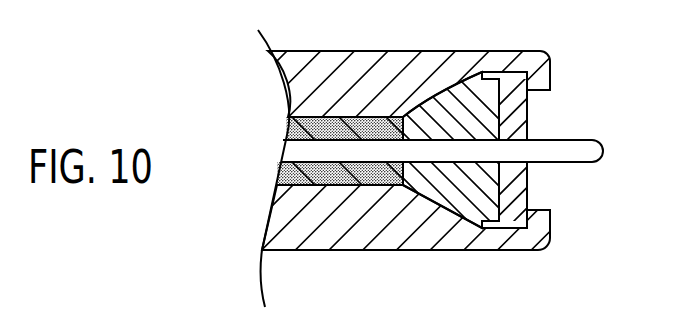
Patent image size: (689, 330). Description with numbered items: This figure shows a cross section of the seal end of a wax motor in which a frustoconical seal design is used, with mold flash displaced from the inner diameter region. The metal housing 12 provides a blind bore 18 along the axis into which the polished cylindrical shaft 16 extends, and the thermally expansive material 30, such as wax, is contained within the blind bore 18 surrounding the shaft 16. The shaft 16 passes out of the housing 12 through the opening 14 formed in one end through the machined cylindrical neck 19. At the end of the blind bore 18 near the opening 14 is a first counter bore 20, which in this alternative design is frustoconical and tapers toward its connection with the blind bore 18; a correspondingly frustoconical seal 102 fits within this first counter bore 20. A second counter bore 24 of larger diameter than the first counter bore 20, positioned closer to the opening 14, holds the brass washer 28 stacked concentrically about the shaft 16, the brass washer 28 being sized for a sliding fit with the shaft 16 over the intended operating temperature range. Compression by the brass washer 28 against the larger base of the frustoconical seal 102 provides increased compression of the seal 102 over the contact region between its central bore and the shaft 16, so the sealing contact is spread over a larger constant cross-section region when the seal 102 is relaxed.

The metal housing 12 is at (328, 63).
The opening 14 is at (412, 72).
The polished cylindrical shaft 16 is at (584, 162).
The blind bore 18 is at (291, 121).
The machined cylindrical neck 19 is at (431, 219).
The first counter bore 20 is at (448, 110).
The second counter bore 24 is at (510, 71).
The brass washer 28 is at (527, 118).
The thermally expansive material 30 is at (284, 205).
The frustoconical seal 102 is at (464, 190).